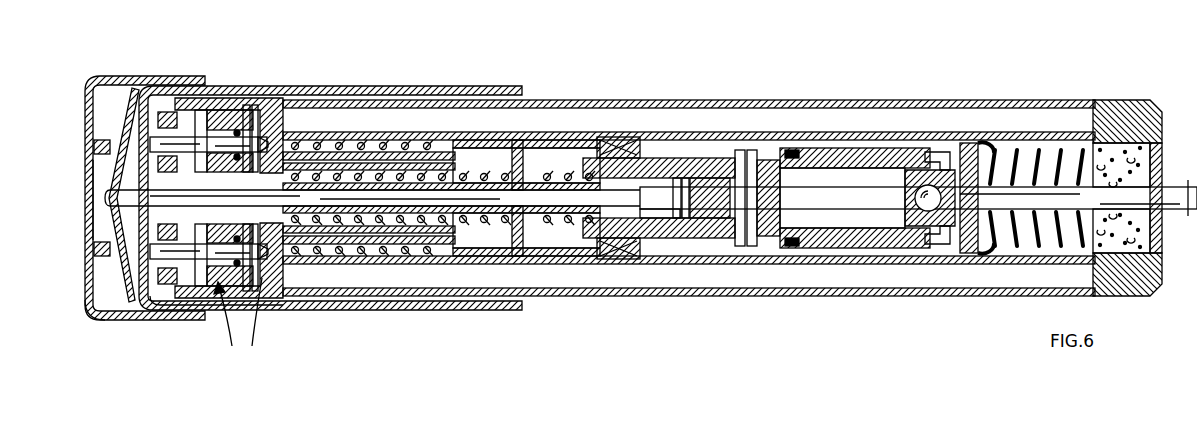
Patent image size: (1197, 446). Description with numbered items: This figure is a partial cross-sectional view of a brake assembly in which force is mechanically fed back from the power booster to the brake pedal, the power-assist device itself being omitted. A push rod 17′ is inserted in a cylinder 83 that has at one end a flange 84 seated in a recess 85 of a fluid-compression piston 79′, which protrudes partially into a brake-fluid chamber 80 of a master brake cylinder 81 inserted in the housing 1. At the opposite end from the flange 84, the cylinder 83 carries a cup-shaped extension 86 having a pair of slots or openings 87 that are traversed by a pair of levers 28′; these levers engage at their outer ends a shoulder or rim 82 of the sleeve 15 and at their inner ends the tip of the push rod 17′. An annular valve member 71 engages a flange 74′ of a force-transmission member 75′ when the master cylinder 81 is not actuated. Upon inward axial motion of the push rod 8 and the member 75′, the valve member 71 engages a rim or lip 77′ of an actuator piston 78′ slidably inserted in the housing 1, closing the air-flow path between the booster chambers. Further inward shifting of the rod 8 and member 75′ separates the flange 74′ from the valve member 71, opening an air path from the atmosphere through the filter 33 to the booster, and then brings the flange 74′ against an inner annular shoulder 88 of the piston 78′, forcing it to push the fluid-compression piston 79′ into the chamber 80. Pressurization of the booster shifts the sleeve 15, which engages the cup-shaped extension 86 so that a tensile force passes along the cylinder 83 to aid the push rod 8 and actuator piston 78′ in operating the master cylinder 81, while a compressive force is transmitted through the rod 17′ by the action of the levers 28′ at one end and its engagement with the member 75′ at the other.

The housing 1 is at (670, 102).
The push rod 8 is at (1172, 212).
The sleeve 15 is at (358, 88).
The push rod 17′ is at (218, 152).
The levers 28′ is at (118, 312).
The filter 33 is at (1118, 148).
The valve member 71 is at (990, 148).
The flange 74′ is at (962, 238).
The force-transmission member 75′ is at (892, 210).
The rim or lip 77′ is at (966, 150).
The actuator piston 78′ is at (875, 150).
The fluid-compression piston 79′ is at (726, 160).
The brake-fluid chamber 80 is at (567, 160).
The master brake cylinder 81 is at (565, 272).
The shoulder or rim 82 is at (124, 280).
The cylinder 83 is at (345, 214).
The flange 84 is at (650, 236).
The recess 85 is at (660, 165).
The cup-shaped extension 86 is at (113, 140).
The slots or openings 87 is at (103, 170).
The inner annular shoulder 88 is at (935, 152).